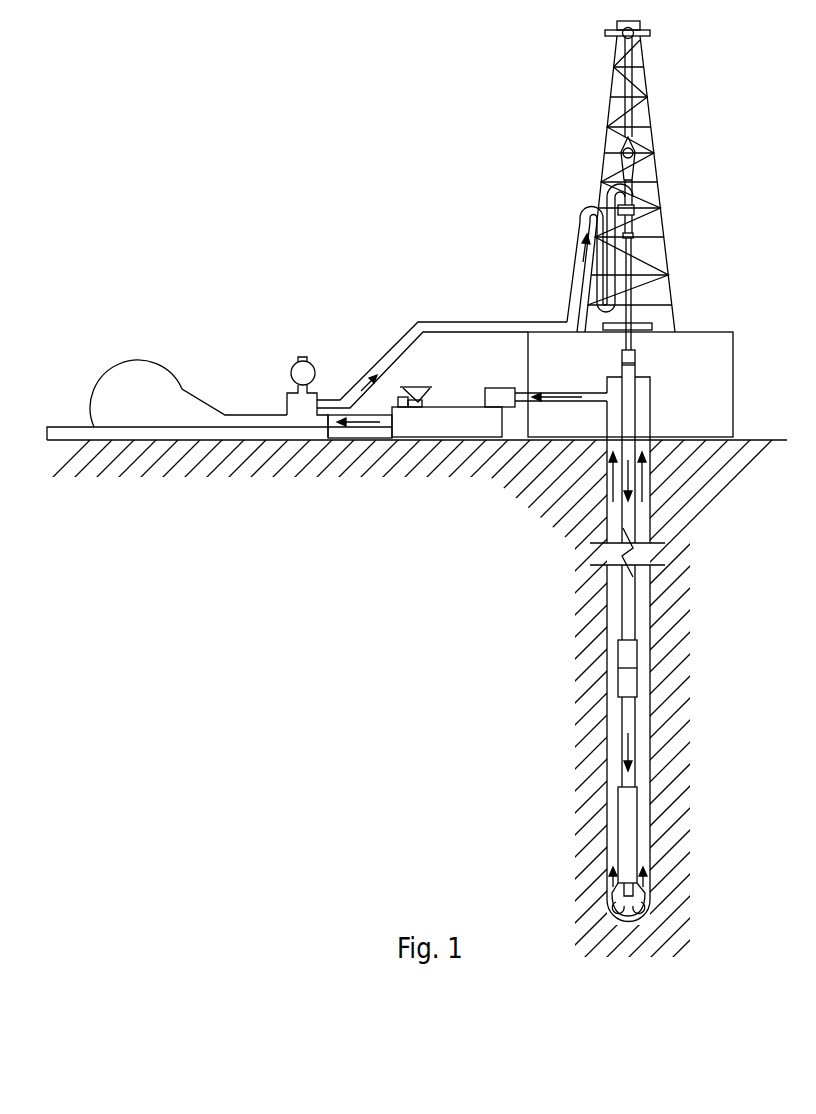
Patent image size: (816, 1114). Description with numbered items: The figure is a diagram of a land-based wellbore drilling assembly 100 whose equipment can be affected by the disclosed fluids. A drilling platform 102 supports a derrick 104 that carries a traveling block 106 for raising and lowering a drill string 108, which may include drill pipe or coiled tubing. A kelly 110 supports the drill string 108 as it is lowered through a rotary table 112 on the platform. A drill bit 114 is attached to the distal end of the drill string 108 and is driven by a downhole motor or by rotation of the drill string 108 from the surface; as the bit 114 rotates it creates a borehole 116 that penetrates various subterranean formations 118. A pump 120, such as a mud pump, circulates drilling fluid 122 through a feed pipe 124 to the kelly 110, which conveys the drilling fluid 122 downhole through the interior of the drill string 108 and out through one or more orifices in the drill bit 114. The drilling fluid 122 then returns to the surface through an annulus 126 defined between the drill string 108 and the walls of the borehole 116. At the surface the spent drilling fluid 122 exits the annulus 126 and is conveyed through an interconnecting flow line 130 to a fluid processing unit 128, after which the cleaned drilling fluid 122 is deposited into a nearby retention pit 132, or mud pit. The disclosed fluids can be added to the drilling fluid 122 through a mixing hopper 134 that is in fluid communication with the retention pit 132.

The wellbore drilling assembly 100 is at (386, 90).
The drilling platform 102 is at (733, 334).
The derrick 104 is at (655, 107).
The traveling block 106 is at (640, 150).
The drill string 108 is at (632, 528).
The kelly 110 is at (633, 252).
The rotary table 112 is at (652, 327).
The drill bit 114 is at (645, 895).
The borehole 116 is at (653, 608).
The subterranean formations 118 is at (514, 636).
The pump 120 is at (149, 409).
The drilling fluid 122 is at (338, 402).
The feed pipe 124 is at (428, 320).
The annulus 126 is at (643, 748).
The fluid processing unit 128 is at (499, 388).
The flow line 130 is at (591, 402).
The retention pit 132 is at (481, 432).
The mixing hopper 134 is at (404, 408).